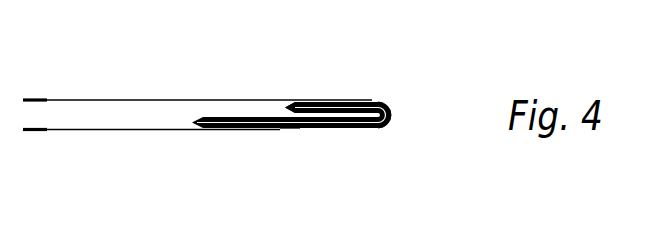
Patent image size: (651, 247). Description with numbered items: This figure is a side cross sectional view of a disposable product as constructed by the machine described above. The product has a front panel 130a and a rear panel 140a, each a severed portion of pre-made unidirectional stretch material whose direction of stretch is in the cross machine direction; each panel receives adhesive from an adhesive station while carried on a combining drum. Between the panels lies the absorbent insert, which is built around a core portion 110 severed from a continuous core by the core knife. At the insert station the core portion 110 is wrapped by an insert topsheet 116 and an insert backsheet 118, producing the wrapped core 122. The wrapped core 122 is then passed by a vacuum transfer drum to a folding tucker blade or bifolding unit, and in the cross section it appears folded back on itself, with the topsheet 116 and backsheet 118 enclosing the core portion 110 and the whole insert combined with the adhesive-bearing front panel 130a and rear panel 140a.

The front panel 130a is at (152, 99).
The rear panel 140a is at (120, 131).
The core portion 110 is at (342, 128).
The insert topsheet 116 is at (275, 108).
The insert backsheet 118 is at (287, 128).
The wrapped core 122 is at (392, 107).